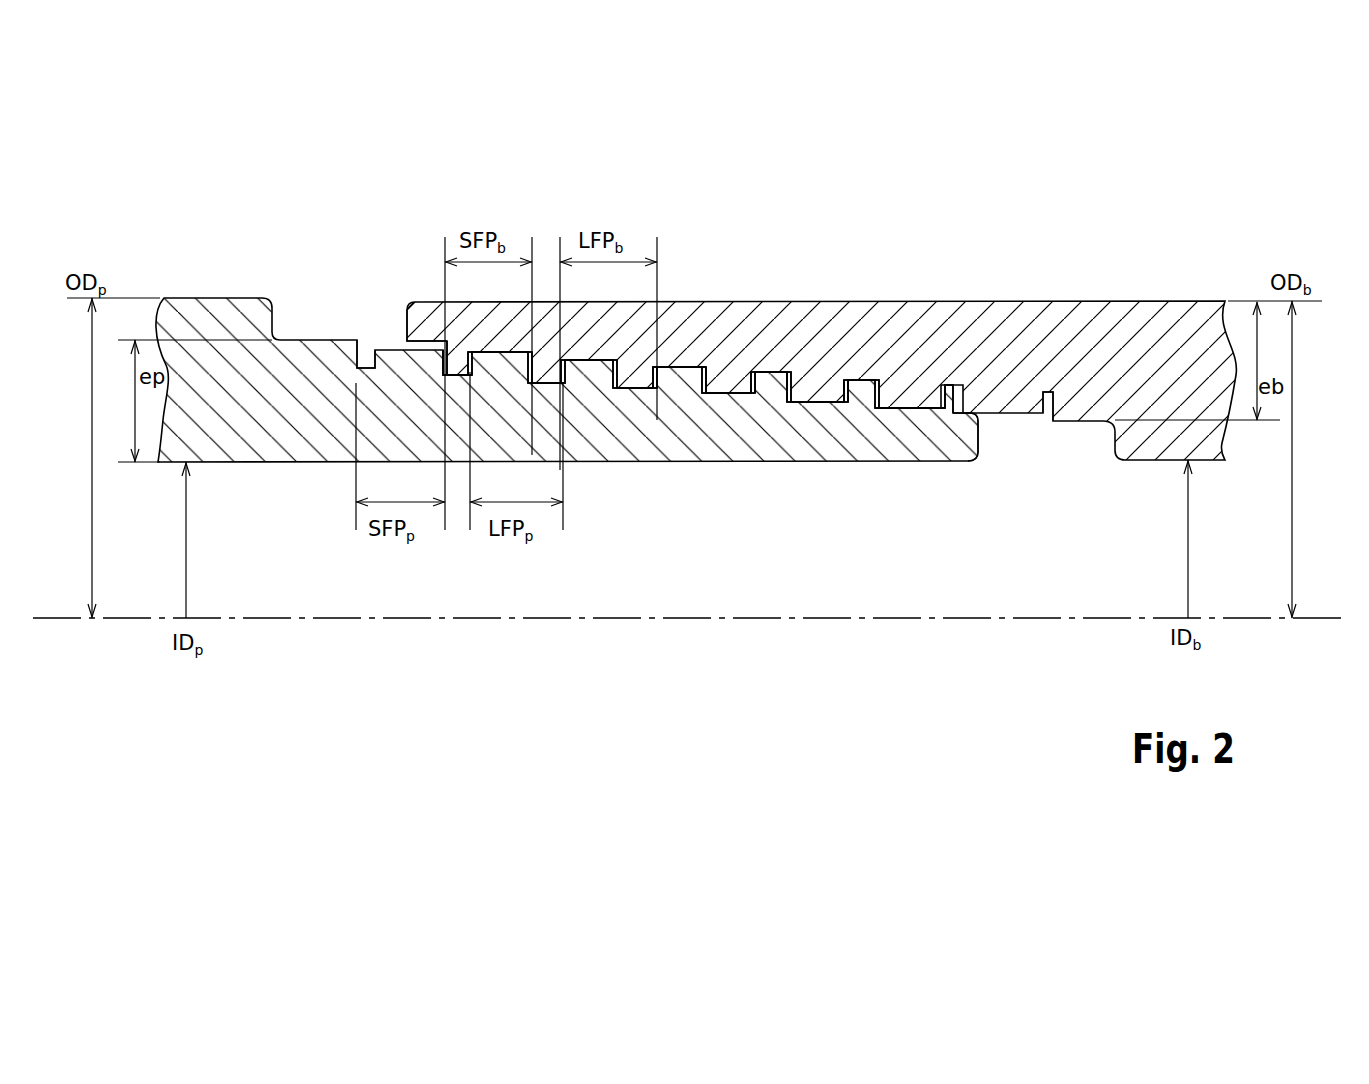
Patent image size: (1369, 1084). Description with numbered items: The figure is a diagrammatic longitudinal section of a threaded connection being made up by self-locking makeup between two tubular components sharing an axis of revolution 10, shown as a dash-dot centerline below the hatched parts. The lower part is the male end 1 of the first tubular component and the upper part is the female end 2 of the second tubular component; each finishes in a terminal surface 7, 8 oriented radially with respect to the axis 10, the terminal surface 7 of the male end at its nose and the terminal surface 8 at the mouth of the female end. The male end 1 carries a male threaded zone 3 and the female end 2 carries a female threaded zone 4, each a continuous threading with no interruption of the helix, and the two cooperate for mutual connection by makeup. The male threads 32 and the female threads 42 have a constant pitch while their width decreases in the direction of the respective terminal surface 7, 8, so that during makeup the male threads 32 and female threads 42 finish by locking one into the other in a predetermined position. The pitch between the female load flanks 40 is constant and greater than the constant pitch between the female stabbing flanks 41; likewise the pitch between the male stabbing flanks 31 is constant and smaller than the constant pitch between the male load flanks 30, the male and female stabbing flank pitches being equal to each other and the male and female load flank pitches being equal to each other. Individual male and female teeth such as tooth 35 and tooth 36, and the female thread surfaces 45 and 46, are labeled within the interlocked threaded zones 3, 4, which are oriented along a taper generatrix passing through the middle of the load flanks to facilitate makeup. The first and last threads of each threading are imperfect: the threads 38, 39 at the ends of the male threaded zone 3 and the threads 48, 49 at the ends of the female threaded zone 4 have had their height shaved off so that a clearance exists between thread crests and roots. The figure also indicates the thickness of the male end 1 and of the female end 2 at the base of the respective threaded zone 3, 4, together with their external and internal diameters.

The male end 1 is at (243, 430).
The female end 2 is at (1125, 318).
The male threaded zone 3 is at (708, 415).
The female threaded zone 4 is at (925, 362).
The terminal surface of the male end 7 is at (981, 438).
The terminal surface of the female end 8 is at (406, 324).
The axis of revolution 10 is at (48, 620).
The male load flanks 30 is at (765, 392).
The male stabbing flanks 31 is at (832, 400).
The male threads 32 is at (778, 410).
The pin thread tooth 35 is at (662, 390).
The box thread crest 36 is at (826, 405).
The imperfect thread 38 is at (950, 415).
The imperfect thread 39 is at (357, 345).
The female load flanks 40 is at (752, 395).
The female stabbing flanks 41 is at (716, 385).
The female threads 42 is at (730, 380).
The box thread root 45 is at (834, 395).
The box thread tooth 46 is at (690, 365).
The imperfect thread 48 is at (1084, 408).
The imperfect thread 49 is at (452, 358).